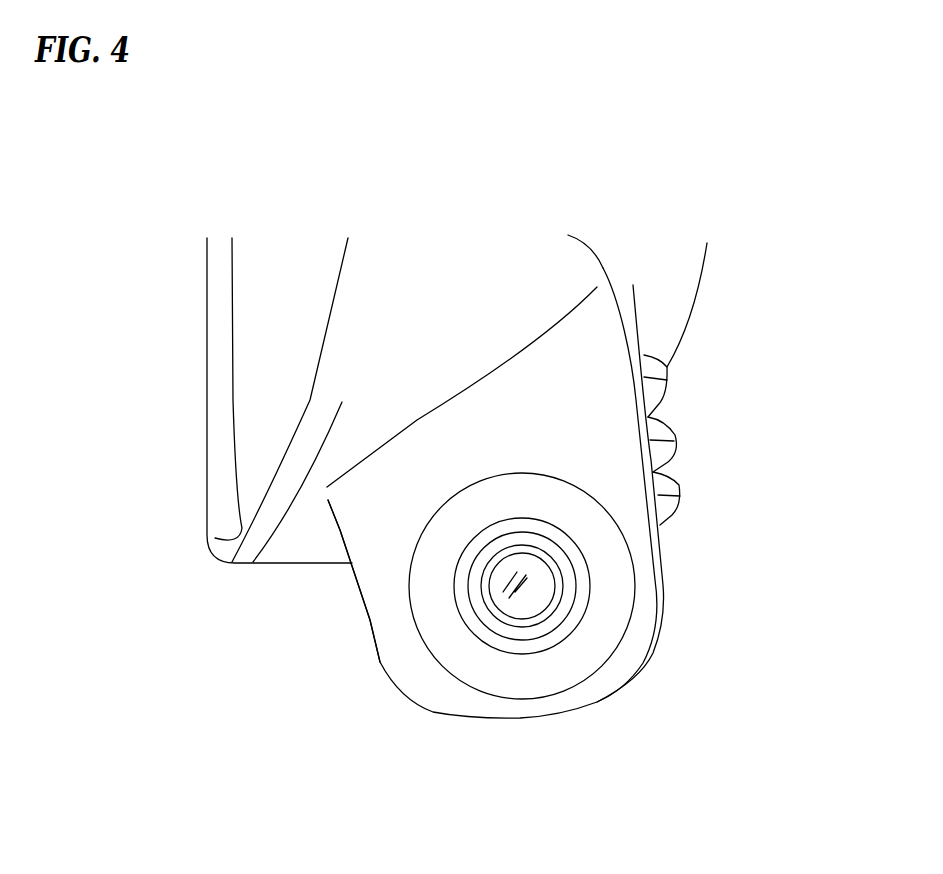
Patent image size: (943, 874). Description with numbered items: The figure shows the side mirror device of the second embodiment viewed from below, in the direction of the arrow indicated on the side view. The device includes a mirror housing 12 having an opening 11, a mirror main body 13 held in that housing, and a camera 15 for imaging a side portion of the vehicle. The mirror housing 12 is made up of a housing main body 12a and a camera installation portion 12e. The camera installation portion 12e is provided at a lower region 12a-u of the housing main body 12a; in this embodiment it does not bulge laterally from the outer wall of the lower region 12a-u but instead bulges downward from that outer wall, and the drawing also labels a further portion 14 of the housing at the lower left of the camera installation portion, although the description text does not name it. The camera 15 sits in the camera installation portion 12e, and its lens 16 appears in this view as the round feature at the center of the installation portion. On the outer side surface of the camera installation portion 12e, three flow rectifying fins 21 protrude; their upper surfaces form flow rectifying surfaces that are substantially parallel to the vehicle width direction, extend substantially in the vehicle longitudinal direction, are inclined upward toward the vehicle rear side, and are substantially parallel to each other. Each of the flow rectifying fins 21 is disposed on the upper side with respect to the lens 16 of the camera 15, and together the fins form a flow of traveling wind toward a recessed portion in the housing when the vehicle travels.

The opening 11 is at (232, 353).
The mirror housing 12 is at (707, 243).
The housing main body 12a is at (443, 318).
The lower region of the housing main body 12a-u is at (578, 277).
The camera installation portion 12e is at (665, 585).
The mirror main body 13 is at (257, 432).
The boss portion 14 is at (377, 512).
The camera 15 is at (448, 670).
The lens 16 is at (523, 603).
The flow rectifying fins 21 is at (667, 372).